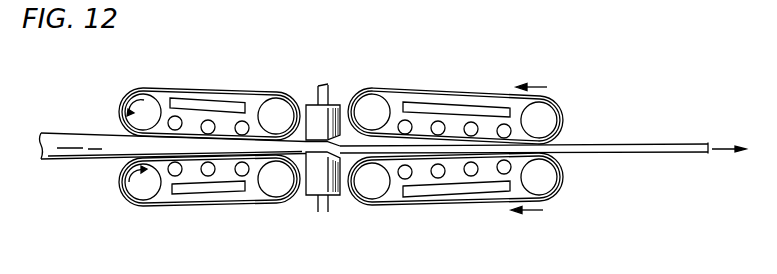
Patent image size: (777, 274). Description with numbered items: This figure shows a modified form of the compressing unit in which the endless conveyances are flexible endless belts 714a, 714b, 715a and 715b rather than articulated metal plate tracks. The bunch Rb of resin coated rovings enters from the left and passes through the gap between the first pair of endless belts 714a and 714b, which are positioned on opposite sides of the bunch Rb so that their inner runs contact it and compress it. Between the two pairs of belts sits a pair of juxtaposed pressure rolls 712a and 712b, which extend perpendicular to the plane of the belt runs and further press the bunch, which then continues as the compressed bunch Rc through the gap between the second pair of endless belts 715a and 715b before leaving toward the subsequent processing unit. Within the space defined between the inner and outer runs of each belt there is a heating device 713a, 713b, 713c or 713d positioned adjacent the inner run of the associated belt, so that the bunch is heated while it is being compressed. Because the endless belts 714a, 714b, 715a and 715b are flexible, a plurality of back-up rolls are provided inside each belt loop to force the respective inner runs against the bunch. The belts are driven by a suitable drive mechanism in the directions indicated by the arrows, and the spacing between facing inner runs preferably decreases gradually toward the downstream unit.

The bunch of resin coated rovings Rb is at (73, 143).
The formed strip material Rc is at (640, 148).
The pressure roll 712a is at (314, 110).
The pressure roll 712b is at (366, 124).
The heating device 713a is at (218, 107).
The heating device 713b is at (185, 189).
The heating device 713c is at (492, 110).
The heating device 713d is at (429, 197).
The endless belt 714a is at (175, 88).
The endless belt 714b is at (217, 207).
The endless belt 715a is at (450, 92).
The endless belt 715b is at (485, 206).